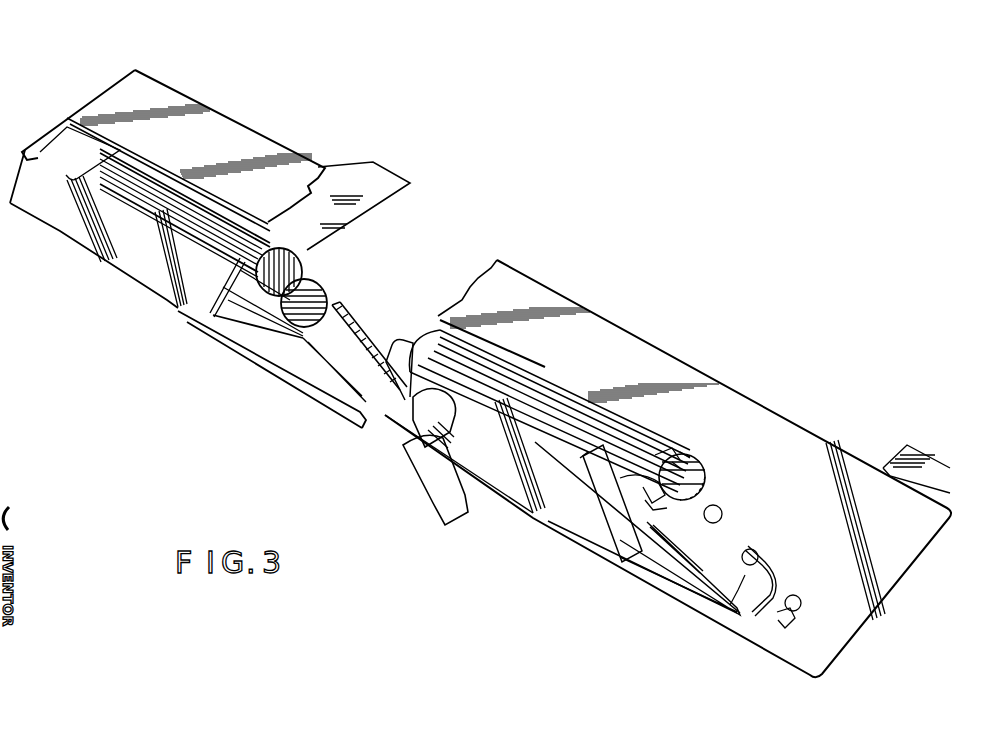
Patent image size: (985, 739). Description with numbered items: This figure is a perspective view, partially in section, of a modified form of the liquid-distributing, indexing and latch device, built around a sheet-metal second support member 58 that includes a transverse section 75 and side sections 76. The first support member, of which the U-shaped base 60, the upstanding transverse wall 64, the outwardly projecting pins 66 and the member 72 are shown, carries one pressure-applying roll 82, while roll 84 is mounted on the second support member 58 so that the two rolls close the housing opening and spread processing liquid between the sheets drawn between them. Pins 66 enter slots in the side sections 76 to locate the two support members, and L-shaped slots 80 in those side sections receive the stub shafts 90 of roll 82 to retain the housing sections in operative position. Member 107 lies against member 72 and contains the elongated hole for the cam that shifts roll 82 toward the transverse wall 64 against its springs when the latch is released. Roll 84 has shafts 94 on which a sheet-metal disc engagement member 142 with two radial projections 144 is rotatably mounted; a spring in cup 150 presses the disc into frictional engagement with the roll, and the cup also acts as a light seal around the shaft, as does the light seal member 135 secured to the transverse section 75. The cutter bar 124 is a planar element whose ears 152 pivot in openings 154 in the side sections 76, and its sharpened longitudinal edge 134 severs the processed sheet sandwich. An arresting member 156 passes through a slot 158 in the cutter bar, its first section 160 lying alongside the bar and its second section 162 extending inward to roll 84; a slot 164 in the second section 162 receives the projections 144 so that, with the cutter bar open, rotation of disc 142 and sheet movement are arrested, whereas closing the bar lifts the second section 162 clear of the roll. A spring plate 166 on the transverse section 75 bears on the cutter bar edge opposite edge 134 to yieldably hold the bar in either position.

The second support member 58 is at (94, 98).
The U-shaped base 60 is at (283, 362).
The upstanding transverse wall 64 is at (385, 420).
The outwardly projecting pins 66 is at (798, 610).
The member 72 is at (413, 412).
The transverse section 75 is at (604, 335).
The side sections 76 is at (768, 430).
The L-shaped slots 80 is at (767, 568).
The roll 82 is at (310, 292).
The roll 84 is at (290, 268).
The stub shafts 90 is at (758, 553).
The shafts 94 is at (716, 522).
The member 107 is at (412, 400).
The cutter bar 124 is at (495, 490).
The sharpened longitudinal edge 134 is at (107, 262).
The light seal member 135 is at (292, 203).
The engagement member 142 is at (685, 452).
The radial projections 144 is at (675, 460).
The cup 150 is at (707, 458).
The ears 152 is at (648, 508).
The openings 154 is at (643, 489).
The arresting member 156 is at (578, 462).
The slot 158 is at (618, 478).
The first section 160 is at (600, 471).
The second section 162 is at (695, 490).
The slot 164 is at (645, 458).
The spring plate 166 is at (55, 152).